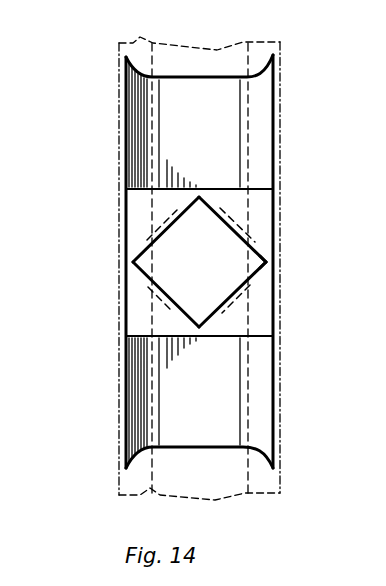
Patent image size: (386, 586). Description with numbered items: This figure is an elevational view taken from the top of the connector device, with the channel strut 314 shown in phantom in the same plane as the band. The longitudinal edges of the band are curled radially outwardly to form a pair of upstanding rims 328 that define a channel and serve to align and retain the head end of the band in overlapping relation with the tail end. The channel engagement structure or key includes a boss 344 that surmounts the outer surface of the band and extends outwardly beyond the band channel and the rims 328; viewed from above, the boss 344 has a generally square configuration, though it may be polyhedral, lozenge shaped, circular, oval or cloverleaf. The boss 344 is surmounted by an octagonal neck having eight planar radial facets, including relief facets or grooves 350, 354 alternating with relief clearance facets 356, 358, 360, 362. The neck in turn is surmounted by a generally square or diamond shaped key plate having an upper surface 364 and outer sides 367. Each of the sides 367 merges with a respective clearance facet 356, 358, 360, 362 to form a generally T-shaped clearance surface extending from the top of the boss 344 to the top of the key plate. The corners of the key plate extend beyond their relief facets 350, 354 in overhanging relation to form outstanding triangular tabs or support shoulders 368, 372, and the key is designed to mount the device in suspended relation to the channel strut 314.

The channel strut 314 is at (240, 44).
The upstanding rims 328 is at (126, 122).
The boss 344 is at (263, 204).
The relief facet 350 is at (197, 298).
The relief facet 354 is at (256, 279).
The relief clearance facet 356 is at (160, 298).
The relief clearance facet 358 is at (165, 220).
The relief clearance facet 360 is at (233, 221).
The relief clearance facet 362 is at (240, 299).
The upper surface 364 is at (196, 320).
The outer sides 367 is at (217, 207).
The support shoulder 368 is at (125, 280).
The support shoulder 372 is at (270, 275).